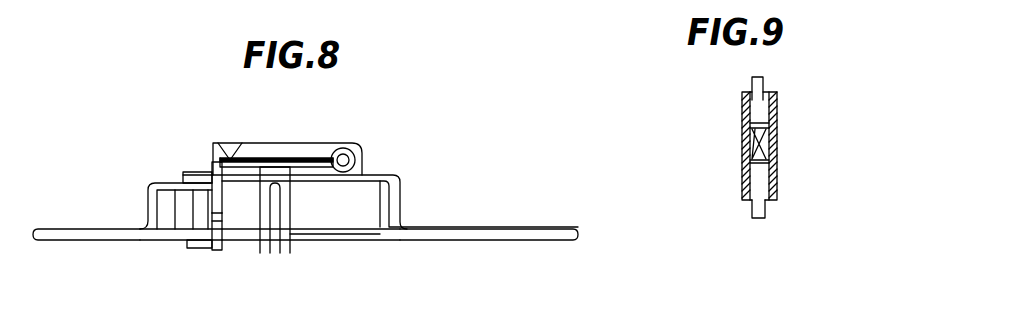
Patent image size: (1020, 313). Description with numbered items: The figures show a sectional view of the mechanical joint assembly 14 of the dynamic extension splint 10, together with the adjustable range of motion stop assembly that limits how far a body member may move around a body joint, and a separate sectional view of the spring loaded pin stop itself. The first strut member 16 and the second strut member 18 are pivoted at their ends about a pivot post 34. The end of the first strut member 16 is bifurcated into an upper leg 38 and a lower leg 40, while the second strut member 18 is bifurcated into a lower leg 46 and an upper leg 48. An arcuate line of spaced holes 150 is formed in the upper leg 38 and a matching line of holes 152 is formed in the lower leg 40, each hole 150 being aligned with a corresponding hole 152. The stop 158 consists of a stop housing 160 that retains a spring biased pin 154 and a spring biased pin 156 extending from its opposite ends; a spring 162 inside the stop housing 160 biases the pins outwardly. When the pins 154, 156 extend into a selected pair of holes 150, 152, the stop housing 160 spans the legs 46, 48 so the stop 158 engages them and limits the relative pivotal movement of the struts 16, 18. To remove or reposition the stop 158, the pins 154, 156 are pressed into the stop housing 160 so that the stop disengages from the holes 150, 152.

In FIG. 8, the dynamic extension splint 10 is at (485, 113).
In FIG. 8, the mechanical joint assembly 14 is at (403, 181).
In FIG. 8, the first strut member 16 is at (557, 245).
In FIG. 8, the second strut member 18 is at (44, 242).
In FIG. 8, the pivot post 34 is at (290, 254).
In FIG. 8, the upper leg 38 is at (370, 174).
In FIG. 8, the lower leg 40 is at (363, 243).
In FIG. 8, the lower leg 46 is at (163, 237).
In FIG. 8, the upper leg 48 is at (182, 185).
In FIG. 8, the hole 150 is at (216, 192).
In FIG. 8, the hole 152 is at (224, 245).
In FIG. 8, the spring biased pin 154 is at (213, 187).
In FIG. 9, the spring biased pin 154 is at (760, 88).
In FIG. 8, the spring biased pin 156 is at (216, 243).
In FIG. 9, the spring biased pin 156 is at (764, 200).
In FIG. 8, the stop 158 is at (218, 200).
In FIG. 9, the stop 158 is at (731, 168).
In FIG. 9, the stop housing 160 is at (770, 165).
In FIG. 9, the spring 162 is at (768, 128).